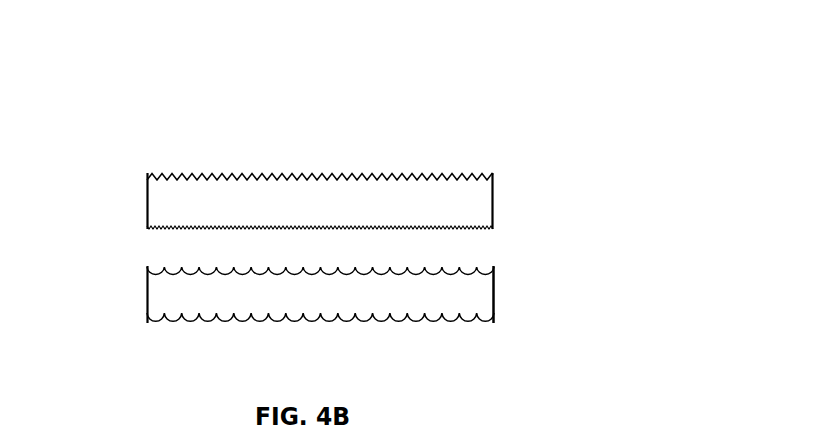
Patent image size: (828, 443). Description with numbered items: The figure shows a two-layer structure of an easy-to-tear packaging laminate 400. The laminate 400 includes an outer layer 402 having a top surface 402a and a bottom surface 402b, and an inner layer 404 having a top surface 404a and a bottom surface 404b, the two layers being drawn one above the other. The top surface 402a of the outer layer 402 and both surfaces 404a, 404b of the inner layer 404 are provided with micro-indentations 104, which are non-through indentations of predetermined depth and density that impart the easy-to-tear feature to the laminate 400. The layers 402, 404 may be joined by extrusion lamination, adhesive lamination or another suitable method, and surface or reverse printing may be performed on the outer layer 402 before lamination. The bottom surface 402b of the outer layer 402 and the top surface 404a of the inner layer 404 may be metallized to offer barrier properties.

The packaging laminate 400 is at (586, 66).
The micro-indentations 104 is at (407, 165).
The outer layer 402 is at (500, 197).
The top surface of outer layer 402a is at (147, 165).
The bottom surface of outer layer 402b is at (153, 233).
The inner layer 404 is at (500, 298).
The top surface of inner layer 404a is at (153, 262).
The bottom surface of inner layer 404b is at (172, 328).